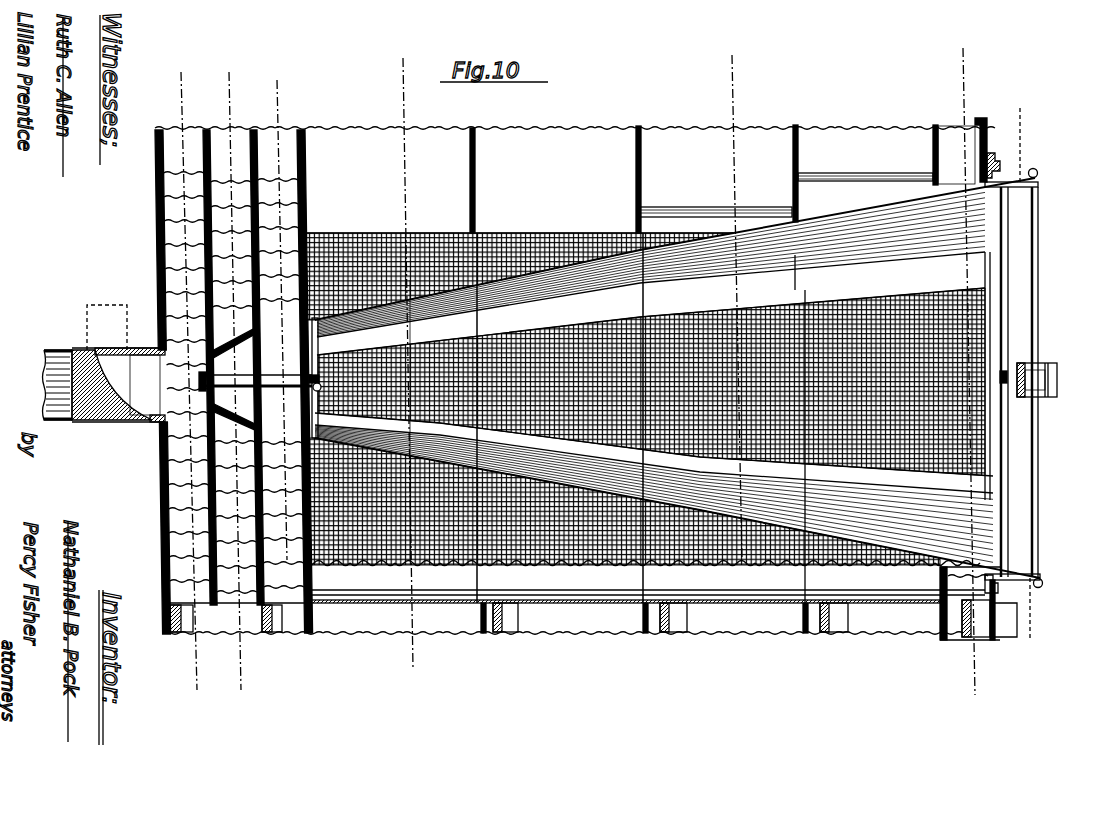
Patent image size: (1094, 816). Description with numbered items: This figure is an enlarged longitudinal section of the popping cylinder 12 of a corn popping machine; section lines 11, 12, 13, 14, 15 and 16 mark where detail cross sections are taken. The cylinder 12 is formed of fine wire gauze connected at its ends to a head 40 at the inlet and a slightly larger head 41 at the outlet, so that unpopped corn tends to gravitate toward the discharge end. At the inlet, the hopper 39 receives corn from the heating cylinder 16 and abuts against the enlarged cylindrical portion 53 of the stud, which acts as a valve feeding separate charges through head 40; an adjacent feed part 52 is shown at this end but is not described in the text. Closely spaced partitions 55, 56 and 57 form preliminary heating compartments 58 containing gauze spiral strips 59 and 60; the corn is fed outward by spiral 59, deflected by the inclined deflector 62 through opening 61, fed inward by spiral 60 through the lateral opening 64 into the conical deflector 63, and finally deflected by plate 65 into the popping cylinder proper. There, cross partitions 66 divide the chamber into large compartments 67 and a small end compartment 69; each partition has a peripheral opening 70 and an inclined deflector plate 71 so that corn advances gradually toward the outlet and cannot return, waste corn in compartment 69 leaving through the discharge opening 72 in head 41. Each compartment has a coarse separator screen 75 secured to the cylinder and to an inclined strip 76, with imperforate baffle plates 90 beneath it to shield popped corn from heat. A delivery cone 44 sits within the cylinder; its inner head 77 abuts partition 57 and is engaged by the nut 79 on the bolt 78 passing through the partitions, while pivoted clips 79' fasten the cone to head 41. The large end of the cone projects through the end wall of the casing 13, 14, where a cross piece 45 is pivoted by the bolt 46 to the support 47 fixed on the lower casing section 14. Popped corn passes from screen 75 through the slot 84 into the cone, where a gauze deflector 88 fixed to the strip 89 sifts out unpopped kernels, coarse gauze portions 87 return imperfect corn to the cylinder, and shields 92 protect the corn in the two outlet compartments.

The section line 11 is at (185, 371).
The popping cylinder 12 is at (608, 116).
The main casing section 13 is at (1012, 137).
The lower casing section 14 is at (1043, 660).
The section line 15 is at (733, 297).
The preliminary heating cylinder 16 is at (965, 360).
The hopper 39 is at (87, 330).
The head 40 is at (157, 190).
The head 41 is at (993, 150).
The delivery cone 44 is at (1036, 273).
The cross piece 45 is at (1009, 318).
The pivot bolt 46 is at (1033, 372).
The support 47 is at (1048, 398).
The feed spout 52 is at (115, 371).
The enlarged cylindrical portion 53 is at (112, 422).
The partition 55 is at (209, 168).
The partition 56 is at (257, 168).
The partition 57 is at (305, 168).
The preliminary heating compartments 58 is at (185, 515).
The spiral strip 59 is at (180, 574).
The spiral strip 60 is at (240, 470).
The opening 61 is at (210, 612).
The inclined deflector 62 is at (186, 612).
The conical deflector 63 is at (222, 335).
The lateral opening 64 is at (247, 350).
The inclined deflector plate 65 is at (283, 612).
The baffles or cross partitions 66 is at (476, 168).
The compartments 67 is at (609, 187).
The compartment 69 is at (945, 128).
The opening 70 is at (490, 615).
The inclined deflector plate 71 is at (503, 615).
The discharge opening 72 is at (1018, 608).
The separator screen 75 is at (430, 568).
The inclined strip 76 is at (700, 418).
The head 77 is at (318, 356).
The bolt 78 is at (290, 375).
The nut 79 is at (348, 364).
The pivoted clips 79' is at (1029, 367).
The opening 84 is at (651, 303).
The coarse gauze portions 87 is at (840, 212).
The deflector 88 is at (670, 336).
The strip 89 is at (1000, 487).
The baffle plates 90 is at (380, 596).
The baffles or shields 92 is at (44, 380).